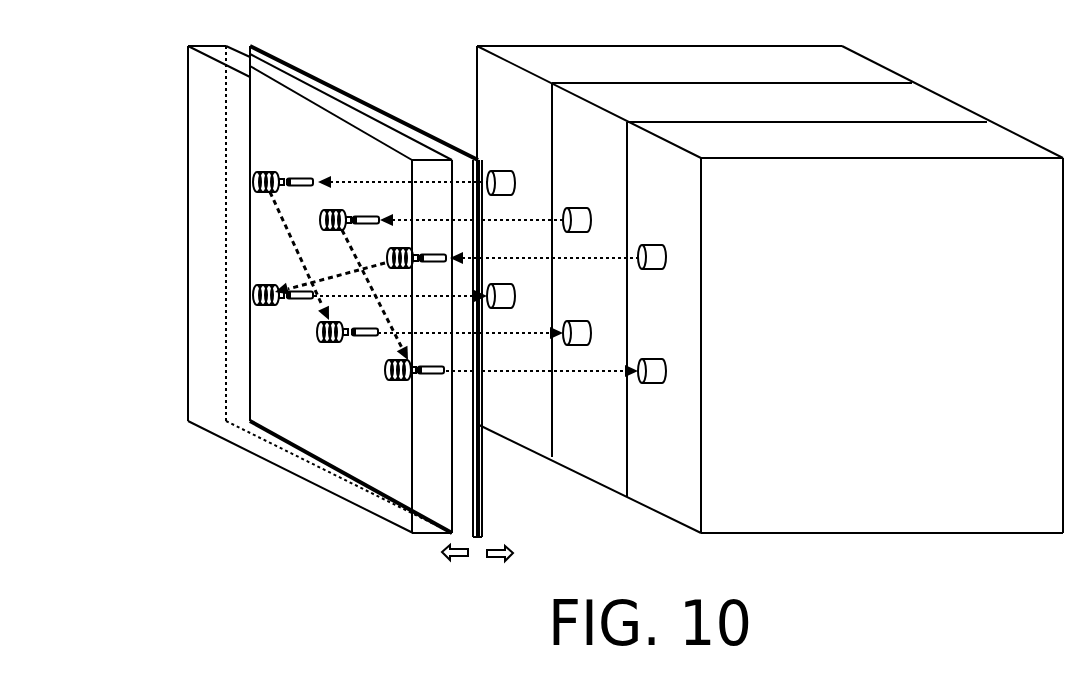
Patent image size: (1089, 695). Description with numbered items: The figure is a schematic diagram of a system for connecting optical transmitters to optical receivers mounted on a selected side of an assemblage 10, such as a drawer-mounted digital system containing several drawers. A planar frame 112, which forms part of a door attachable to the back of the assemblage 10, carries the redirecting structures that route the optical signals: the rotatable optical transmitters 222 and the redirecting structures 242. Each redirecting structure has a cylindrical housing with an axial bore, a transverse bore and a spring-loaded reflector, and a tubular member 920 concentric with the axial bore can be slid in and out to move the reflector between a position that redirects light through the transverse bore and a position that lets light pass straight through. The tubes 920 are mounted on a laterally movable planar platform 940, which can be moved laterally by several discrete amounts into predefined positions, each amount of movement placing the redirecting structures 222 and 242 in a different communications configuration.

The assemblage 10 is at (822, 46).
The planar frame 112 is at (188, 123).
The rotatable optical transmitters 222 is at (387, 258).
The redirecting structures 242 is at (385, 370).
The tubular member 920 is at (430, 254).
The laterally movable planar platform 940 is at (320, 80).